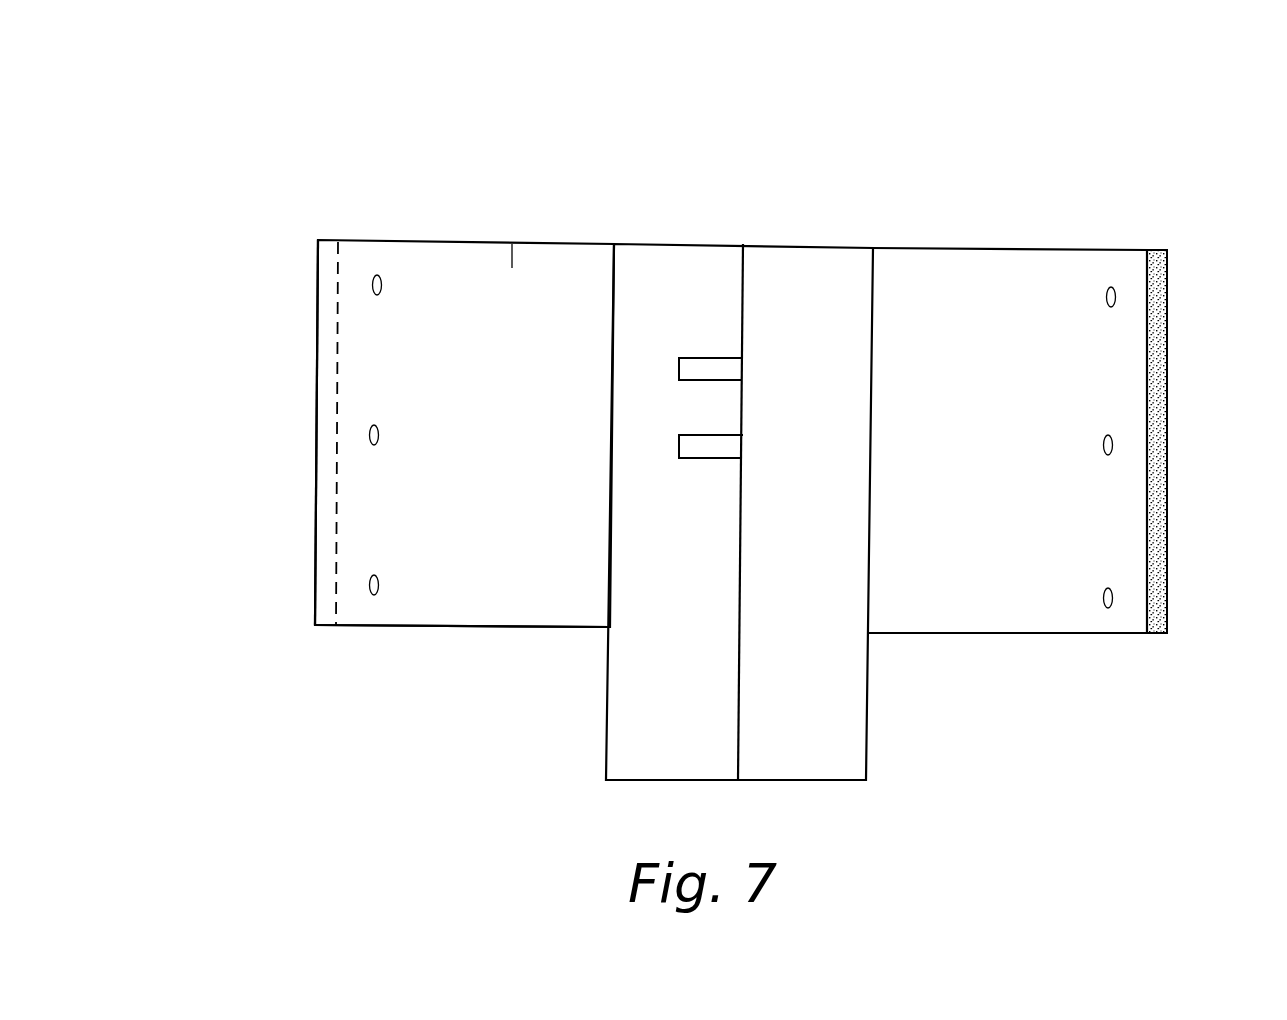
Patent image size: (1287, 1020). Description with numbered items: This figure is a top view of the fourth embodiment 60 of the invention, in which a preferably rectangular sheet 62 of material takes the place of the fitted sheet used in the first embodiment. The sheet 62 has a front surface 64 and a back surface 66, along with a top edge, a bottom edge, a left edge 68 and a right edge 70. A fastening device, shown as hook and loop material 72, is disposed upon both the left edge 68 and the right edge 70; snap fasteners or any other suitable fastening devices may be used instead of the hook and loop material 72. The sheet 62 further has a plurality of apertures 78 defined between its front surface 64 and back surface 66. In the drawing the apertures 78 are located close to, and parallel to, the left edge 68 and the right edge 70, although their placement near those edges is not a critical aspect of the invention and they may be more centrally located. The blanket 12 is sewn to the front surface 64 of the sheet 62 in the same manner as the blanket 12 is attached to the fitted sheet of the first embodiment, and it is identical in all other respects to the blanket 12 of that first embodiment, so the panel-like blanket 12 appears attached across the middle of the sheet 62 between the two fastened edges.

The fourth embodiment 60 is at (1140, 130).
The sheet 62 is at (430, 240).
The front surface 64 is at (508, 618).
The back surface 66 is at (512, 246).
The left edge 68 is at (315, 483).
The right edge 70 is at (1167, 455).
The hook and loop material 72 is at (318, 353).
The apertures 78 is at (377, 275).
The blanket 12 is at (874, 303).